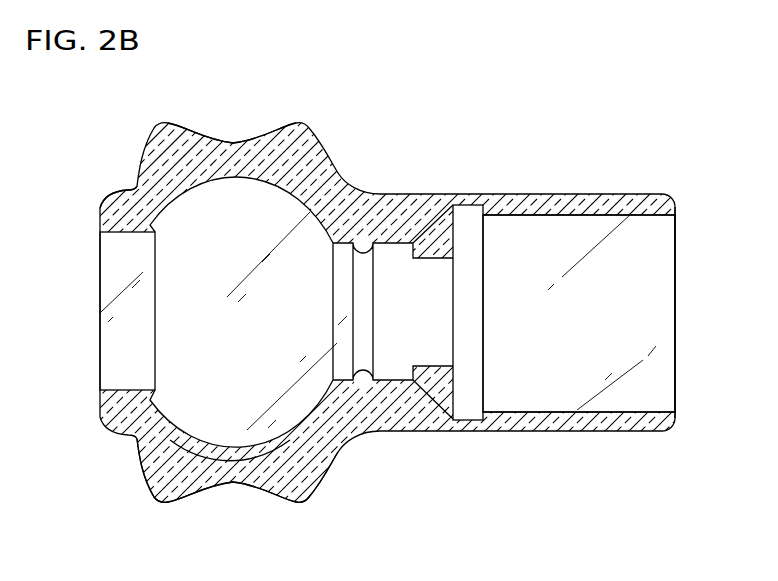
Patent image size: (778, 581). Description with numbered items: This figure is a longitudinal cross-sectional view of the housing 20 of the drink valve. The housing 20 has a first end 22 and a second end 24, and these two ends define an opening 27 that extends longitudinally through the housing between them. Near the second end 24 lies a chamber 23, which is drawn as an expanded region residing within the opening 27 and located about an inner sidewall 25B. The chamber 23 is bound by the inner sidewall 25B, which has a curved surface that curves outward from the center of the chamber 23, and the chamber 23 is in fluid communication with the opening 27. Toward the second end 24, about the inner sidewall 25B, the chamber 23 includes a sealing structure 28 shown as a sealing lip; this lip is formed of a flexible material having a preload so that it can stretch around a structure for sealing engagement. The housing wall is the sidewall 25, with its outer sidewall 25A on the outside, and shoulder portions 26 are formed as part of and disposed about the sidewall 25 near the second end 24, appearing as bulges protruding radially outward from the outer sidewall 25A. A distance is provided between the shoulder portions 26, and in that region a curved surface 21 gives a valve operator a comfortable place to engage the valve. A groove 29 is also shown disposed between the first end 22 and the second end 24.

The housing 20 is at (508, 157).
The surface 21 is at (207, 142).
The first end 22 is at (676, 368).
The chamber 23 is at (185, 388).
The second end 24 is at (98, 328).
The sidewall 25 is at (238, 132).
The outer sidewall 25A is at (228, 483).
The inner sidewall 25B is at (226, 447).
The shoulder portions 26 is at (160, 503).
The opening 27 is at (575, 250).
The sealing structure 28 is at (135, 225).
The groove 29 is at (452, 422).